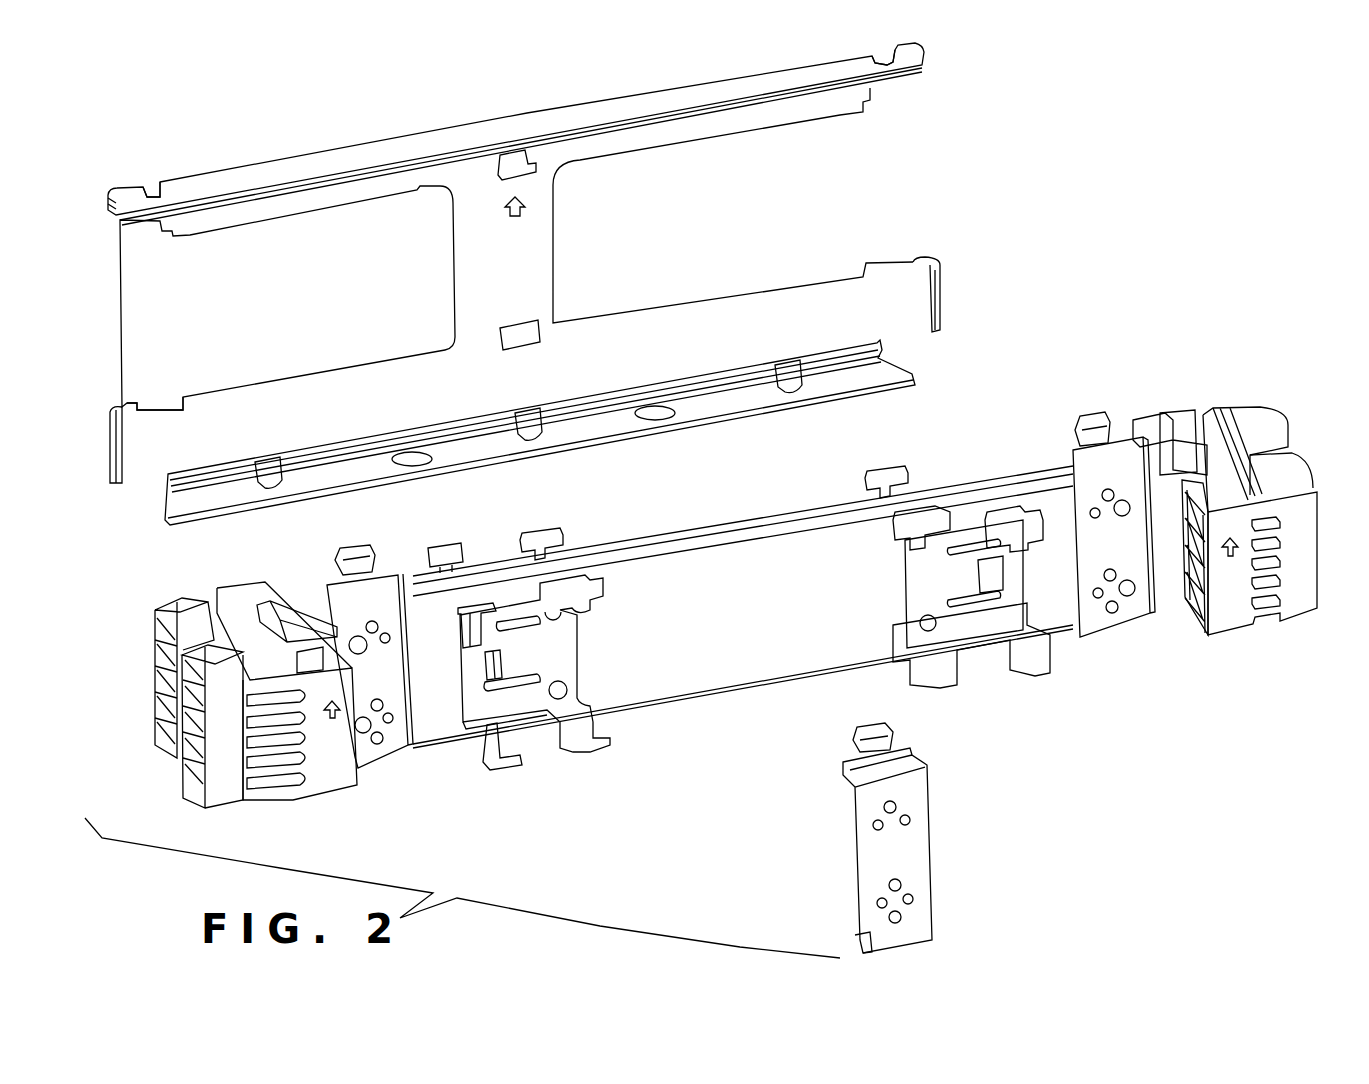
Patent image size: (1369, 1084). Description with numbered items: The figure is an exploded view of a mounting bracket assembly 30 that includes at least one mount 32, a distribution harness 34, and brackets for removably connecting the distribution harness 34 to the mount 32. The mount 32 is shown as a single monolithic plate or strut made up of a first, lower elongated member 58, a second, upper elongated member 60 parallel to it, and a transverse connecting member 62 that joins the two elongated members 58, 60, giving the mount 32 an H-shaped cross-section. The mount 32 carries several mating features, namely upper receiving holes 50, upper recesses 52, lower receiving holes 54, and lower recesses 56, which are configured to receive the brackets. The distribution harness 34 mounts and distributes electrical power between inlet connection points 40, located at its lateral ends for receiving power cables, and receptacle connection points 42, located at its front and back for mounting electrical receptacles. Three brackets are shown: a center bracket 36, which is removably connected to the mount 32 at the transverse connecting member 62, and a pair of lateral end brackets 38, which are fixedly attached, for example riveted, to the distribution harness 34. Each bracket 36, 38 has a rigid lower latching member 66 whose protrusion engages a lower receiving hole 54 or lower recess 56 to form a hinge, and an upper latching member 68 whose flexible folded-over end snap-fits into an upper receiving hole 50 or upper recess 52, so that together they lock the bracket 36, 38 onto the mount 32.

The mounting bracket assembly 30 is at (1115, 270).
The mount 32 is at (513, 284).
The distribution harness 34 is at (648, 672).
The center bracket 36 is at (883, 850).
The lateral end bracket 38 is at (1122, 588).
The inlet connection point 40 is at (1290, 430).
The receptacle connection point 42 is at (992, 450).
The upper receiving hole 50 is at (528, 177).
The upper recess 52 is at (150, 229).
The lower receiving hole 54 is at (546, 320).
The lower recess 56 is at (892, 268).
The lower elongated member 58 is at (112, 460).
The upper elongated member 60 is at (220, 180).
The transverse connecting member 62 is at (453, 270).
The lower latching member 66 is at (845, 928).
The upper latching member 68 is at (330, 552).